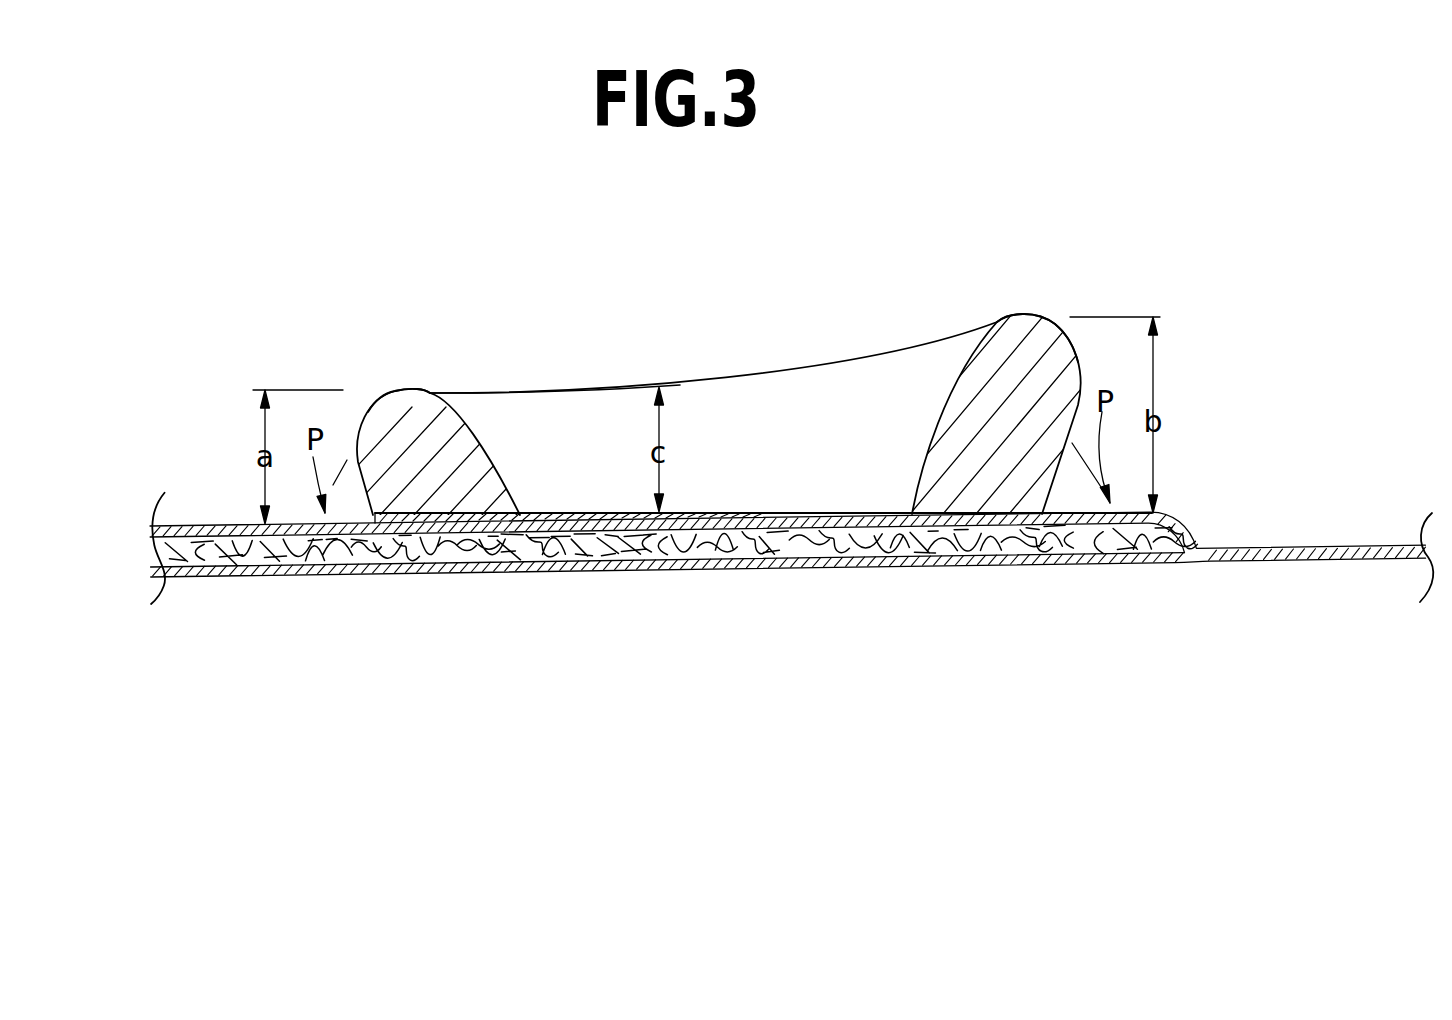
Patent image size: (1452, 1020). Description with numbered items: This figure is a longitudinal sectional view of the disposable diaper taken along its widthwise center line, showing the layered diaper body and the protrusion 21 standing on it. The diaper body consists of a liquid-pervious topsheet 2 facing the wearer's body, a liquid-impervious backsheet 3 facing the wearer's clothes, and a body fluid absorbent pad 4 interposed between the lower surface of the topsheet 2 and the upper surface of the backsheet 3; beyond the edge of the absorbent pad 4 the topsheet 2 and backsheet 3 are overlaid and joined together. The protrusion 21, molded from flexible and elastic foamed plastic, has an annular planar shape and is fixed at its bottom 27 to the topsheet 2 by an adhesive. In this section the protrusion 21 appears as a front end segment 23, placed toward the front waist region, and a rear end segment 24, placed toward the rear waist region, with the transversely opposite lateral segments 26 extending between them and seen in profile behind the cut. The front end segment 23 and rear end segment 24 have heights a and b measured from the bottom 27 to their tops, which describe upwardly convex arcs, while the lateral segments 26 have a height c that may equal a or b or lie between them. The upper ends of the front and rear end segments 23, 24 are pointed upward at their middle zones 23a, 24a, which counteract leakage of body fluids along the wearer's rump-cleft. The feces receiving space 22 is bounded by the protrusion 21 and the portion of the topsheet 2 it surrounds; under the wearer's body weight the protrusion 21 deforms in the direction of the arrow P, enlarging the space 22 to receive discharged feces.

The liquid-pervious topsheet 2 is at (190, 525).
The liquid-impervious backsheet 3 is at (889, 571).
The body fluid absorbent pad 4 is at (797, 542).
The protrusion 21 is at (844, 342).
The feces receiving space 22 is at (903, 357).
The front end segment 23 is at (417, 403).
The middle zone of the front end segment 23a is at (398, 389).
The rear end segment 24 is at (1007, 330).
The middle zone of the rear end segment 24a is at (1032, 318).
The lateral segments 26 is at (529, 407).
The bottom 27 is at (745, 512).